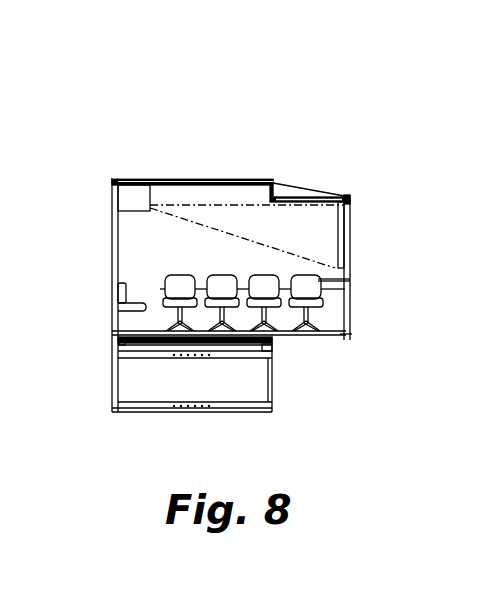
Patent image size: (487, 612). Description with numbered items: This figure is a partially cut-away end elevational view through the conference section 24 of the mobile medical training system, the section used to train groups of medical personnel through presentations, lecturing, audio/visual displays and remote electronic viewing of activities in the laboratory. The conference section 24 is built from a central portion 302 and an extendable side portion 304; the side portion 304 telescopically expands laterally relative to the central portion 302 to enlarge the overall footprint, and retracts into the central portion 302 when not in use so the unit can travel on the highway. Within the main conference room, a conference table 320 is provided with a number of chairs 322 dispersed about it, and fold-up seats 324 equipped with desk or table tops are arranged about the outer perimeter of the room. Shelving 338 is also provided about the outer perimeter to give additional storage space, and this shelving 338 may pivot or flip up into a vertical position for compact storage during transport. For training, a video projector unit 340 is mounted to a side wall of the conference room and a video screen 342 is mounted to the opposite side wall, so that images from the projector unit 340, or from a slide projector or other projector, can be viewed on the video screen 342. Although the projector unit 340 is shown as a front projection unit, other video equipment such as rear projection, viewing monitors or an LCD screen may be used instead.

The conference section 24 is at (98, 143).
The central portion 302 is at (221, 178).
The extendable side portion 304 is at (310, 190).
The conference table 320 is at (200, 289).
The chairs 322 is at (315, 332).
The fold-up seats 324 is at (121, 292).
The shelving 338 is at (330, 285).
The video projector unit 340 is at (133, 188).
The video screen 342 is at (344, 230).